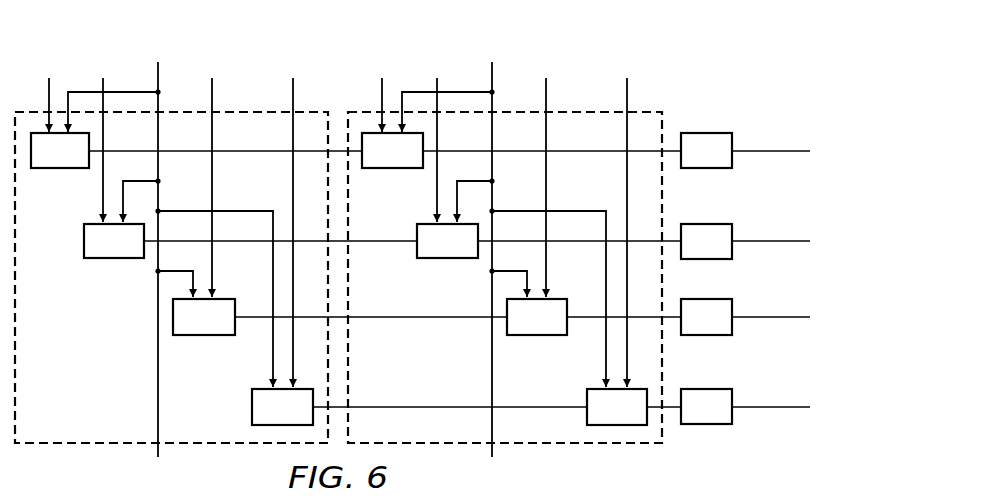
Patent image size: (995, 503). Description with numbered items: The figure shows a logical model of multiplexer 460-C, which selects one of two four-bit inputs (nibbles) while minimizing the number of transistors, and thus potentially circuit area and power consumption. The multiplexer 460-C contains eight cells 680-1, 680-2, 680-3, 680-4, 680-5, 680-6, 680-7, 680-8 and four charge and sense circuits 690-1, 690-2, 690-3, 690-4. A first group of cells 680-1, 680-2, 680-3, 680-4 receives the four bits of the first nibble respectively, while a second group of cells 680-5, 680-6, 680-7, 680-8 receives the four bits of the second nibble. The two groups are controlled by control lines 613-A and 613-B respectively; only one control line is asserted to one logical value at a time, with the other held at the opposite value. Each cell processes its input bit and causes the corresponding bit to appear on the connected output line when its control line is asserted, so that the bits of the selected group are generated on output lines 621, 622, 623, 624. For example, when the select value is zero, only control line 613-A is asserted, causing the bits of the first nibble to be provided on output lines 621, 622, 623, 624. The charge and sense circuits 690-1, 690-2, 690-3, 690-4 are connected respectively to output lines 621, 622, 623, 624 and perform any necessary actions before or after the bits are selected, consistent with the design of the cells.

The multiplexer 460-C is at (680, 72).
The control line 613-A is at (157, 77).
The control line 613-B is at (492, 77).
The cell 680-1 is at (62, 168).
The cell 680-2 is at (115, 258).
The cell 680-3 is at (205, 335).
The cell 680-4 is at (252, 408).
The cell 680-5 is at (393, 168).
The cell 680-6 is at (447, 258).
The cell 680-7 is at (538, 335).
The cell 680-8 is at (587, 410).
The charge and sense circuit 690-1 is at (710, 133).
The charge and sense circuit 690-2 is at (710, 224).
The charge and sense circuit 690-3 is at (710, 335).
The charge and sense circuit 690-4 is at (710, 424).
The output line 621 is at (770, 151).
The output line 622 is at (770, 241).
The output line 623 is at (770, 317).
The output line 624 is at (775, 407).